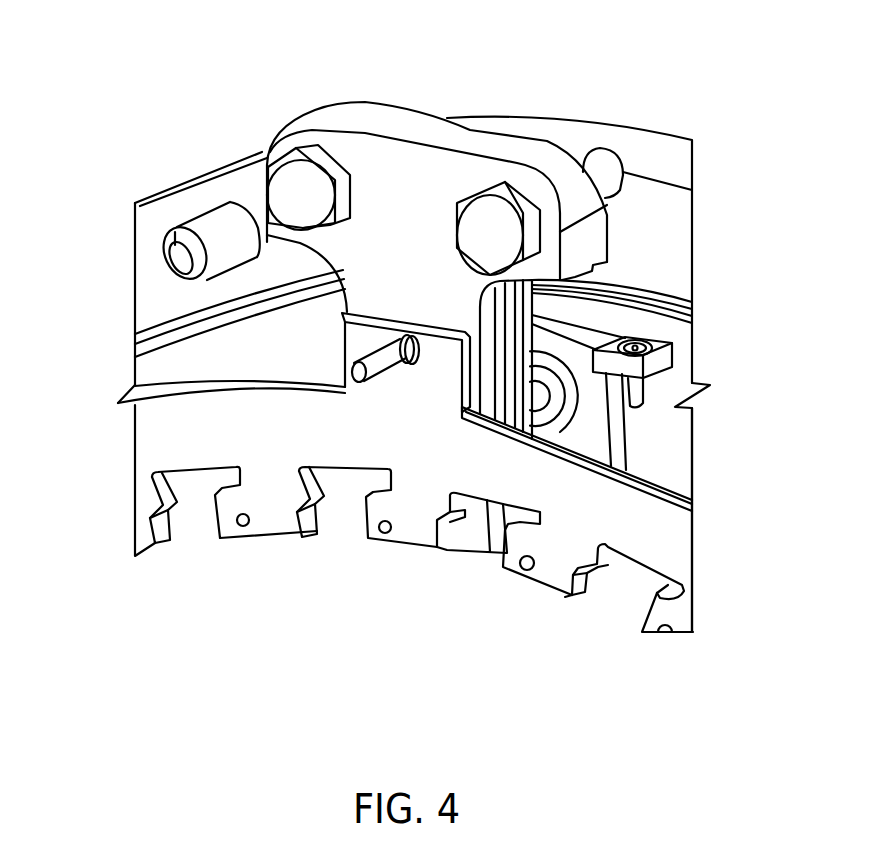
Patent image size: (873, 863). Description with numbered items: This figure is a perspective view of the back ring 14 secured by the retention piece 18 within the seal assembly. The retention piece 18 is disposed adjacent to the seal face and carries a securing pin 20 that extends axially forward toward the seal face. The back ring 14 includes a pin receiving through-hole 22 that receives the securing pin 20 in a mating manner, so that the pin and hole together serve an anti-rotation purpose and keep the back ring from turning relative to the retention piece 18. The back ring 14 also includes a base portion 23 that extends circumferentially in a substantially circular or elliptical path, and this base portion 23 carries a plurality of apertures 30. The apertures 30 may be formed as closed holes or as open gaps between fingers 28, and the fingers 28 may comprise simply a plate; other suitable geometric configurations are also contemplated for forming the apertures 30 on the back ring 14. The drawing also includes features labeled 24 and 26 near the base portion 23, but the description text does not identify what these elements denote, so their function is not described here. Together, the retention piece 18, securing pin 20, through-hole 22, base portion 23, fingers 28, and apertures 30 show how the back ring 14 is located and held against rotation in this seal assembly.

The back ring 14 is at (97, 443).
The retention piece 18 is at (407, 127).
The securing pin 20 is at (360, 376).
The pin receiving through-hole 22 is at (395, 340).
The base portion 23 is at (677, 543).
The support ledge 24 is at (649, 478).
The end tab 26 is at (624, 584).
The fingers 28 is at (550, 587).
The apertures 30 is at (238, 523).